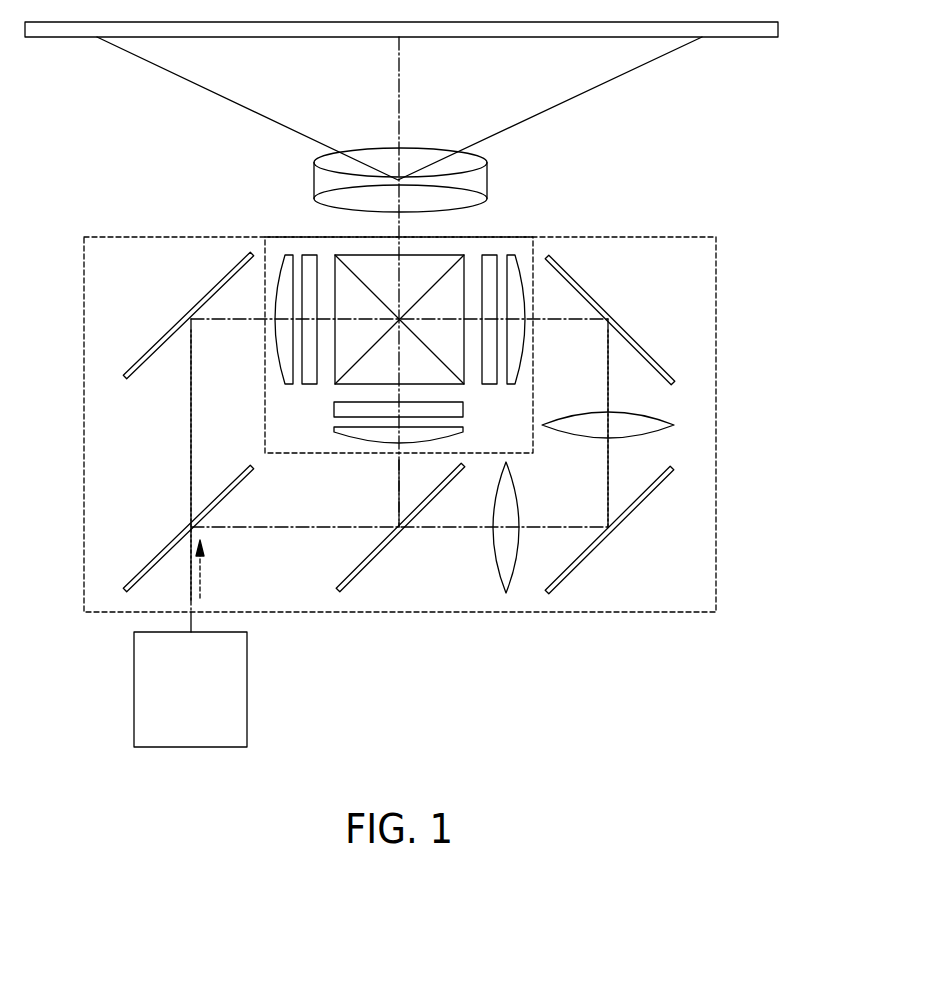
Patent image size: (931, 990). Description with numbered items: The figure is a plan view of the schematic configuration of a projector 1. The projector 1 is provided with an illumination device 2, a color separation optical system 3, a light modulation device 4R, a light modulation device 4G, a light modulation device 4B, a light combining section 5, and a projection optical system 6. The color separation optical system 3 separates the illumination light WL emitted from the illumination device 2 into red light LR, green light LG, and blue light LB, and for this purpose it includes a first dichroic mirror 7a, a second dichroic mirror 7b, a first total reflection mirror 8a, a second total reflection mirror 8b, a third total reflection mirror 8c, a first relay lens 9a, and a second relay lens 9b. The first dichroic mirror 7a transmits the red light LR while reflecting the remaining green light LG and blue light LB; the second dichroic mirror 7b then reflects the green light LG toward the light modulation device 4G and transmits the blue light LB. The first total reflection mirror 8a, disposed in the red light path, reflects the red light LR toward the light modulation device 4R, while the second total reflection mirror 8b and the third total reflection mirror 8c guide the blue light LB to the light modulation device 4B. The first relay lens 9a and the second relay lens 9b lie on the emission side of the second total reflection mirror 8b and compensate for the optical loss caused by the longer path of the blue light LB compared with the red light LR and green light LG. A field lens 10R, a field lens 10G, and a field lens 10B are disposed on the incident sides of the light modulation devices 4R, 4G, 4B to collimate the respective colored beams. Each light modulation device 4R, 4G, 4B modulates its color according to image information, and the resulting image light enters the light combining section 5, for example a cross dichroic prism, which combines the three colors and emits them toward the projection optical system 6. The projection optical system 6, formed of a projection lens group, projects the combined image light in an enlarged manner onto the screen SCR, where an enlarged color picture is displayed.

The projector 1 is at (722, 219).
The illumination device 2 is at (247, 687).
The color separation optical system 3 is at (84, 372).
The light modulation device 4R is at (306, 253).
The light modulation device 4G is at (335, 412).
The light modulation device 4B is at (492, 253).
The light combining section 5 is at (420, 266).
The projection optical system 6 is at (382, 158).
The first dichroic mirror 7a is at (158, 558).
The second dichroic mirror 7b is at (378, 555).
The first total reflection mirror 8a is at (167, 338).
The second total reflection mirror 8b is at (630, 515).
The third total reflection mirror 8c is at (633, 336).
The first relay lens 9a is at (492, 545).
The second relay lens 9b is at (660, 418).
The field lens 10R is at (288, 254).
The field lens 10G is at (338, 432).
The field lens 10B is at (512, 254).
The screen SCR is at (747, 40).
The illumination light WL is at (202, 577).
The red light LR is at (191, 444).
The green light LG is at (397, 487).
The blue light LB is at (606, 480).